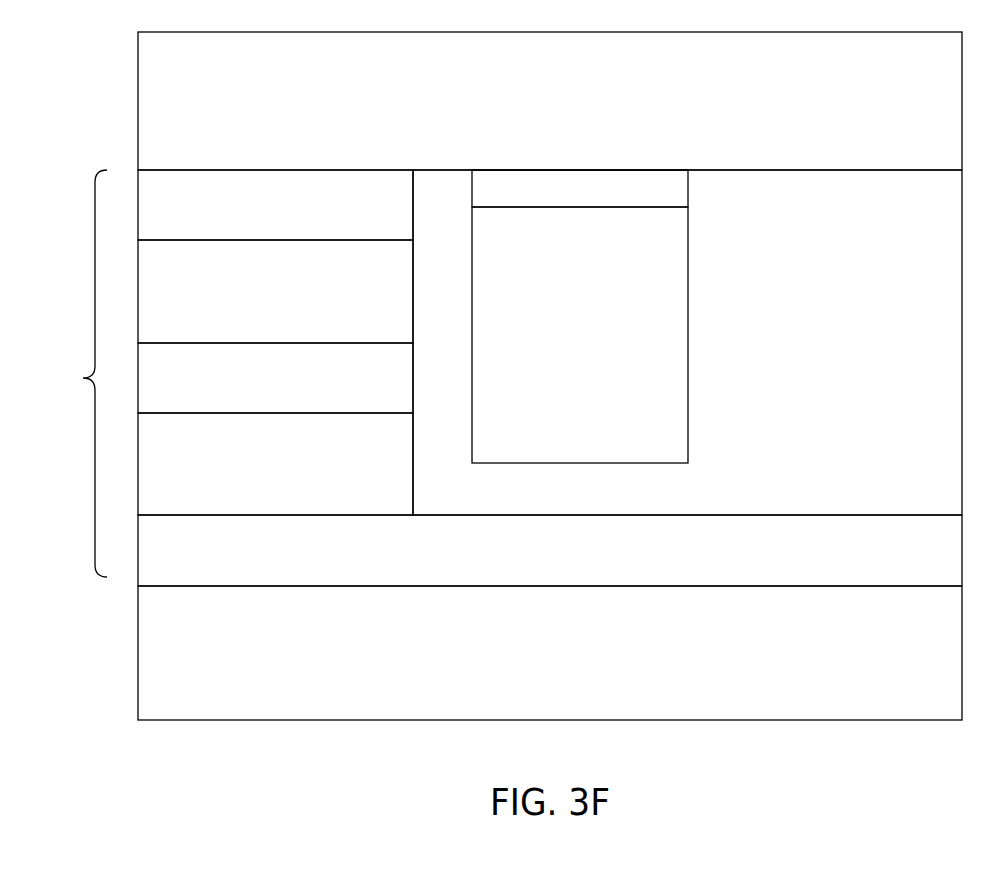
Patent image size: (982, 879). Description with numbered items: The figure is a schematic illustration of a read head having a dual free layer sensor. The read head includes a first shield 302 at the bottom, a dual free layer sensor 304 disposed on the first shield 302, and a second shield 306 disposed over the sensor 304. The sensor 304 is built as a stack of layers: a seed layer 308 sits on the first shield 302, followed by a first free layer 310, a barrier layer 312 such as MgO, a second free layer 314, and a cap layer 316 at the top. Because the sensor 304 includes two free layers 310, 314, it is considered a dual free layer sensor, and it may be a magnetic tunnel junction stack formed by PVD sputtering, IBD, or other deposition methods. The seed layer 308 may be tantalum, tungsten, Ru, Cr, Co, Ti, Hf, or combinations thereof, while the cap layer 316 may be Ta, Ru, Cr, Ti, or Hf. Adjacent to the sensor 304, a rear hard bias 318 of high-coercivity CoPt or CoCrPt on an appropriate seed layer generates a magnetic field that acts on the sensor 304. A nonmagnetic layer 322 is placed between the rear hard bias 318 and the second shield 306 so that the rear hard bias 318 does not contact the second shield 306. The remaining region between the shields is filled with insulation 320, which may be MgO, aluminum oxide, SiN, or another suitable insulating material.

The first shield (S1) 302 is at (532, 668).
The dual free layer (DFL) sensor 304 is at (74, 373).
The second shield (S2) 306 is at (528, 118).
The seed layer 308 is at (532, 563).
The first free layer 310 is at (256, 475).
The barrier layer 312 is at (256, 392).
The second free layer 314 is at (256, 308).
The cap layer 316 is at (256, 218).
The rear hard bias (RHB) 318 is at (560, 275).
The insulation 320 is at (814, 401).
The nonmagnetic layer 322 is at (560, 200).